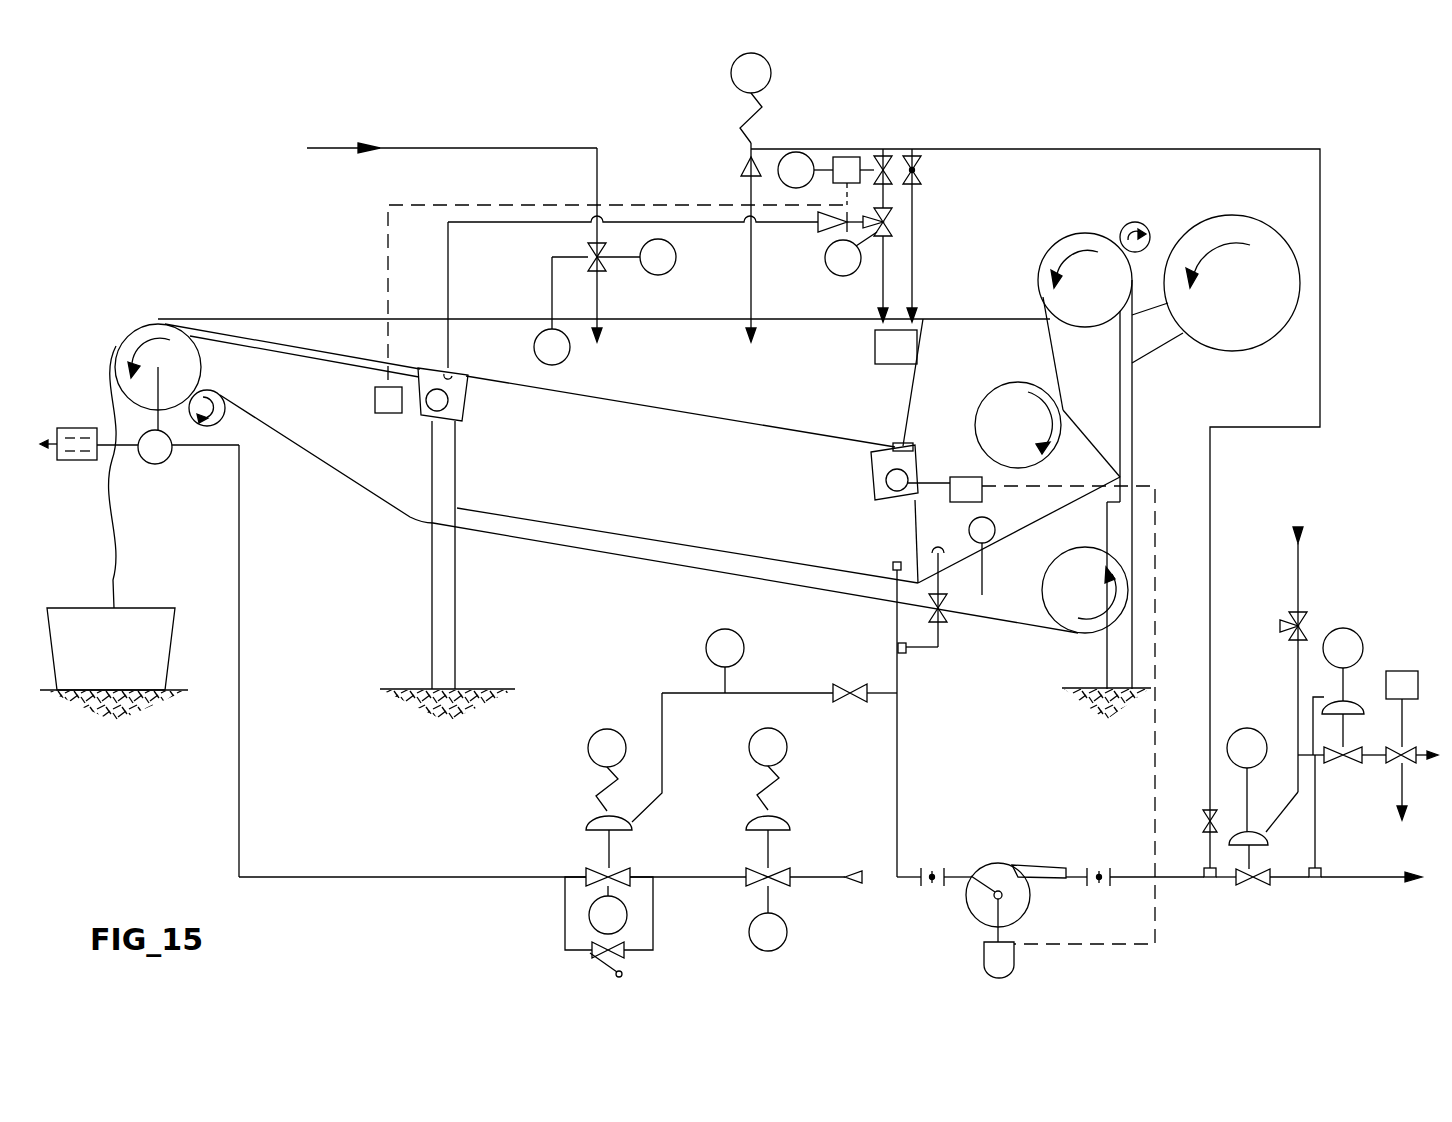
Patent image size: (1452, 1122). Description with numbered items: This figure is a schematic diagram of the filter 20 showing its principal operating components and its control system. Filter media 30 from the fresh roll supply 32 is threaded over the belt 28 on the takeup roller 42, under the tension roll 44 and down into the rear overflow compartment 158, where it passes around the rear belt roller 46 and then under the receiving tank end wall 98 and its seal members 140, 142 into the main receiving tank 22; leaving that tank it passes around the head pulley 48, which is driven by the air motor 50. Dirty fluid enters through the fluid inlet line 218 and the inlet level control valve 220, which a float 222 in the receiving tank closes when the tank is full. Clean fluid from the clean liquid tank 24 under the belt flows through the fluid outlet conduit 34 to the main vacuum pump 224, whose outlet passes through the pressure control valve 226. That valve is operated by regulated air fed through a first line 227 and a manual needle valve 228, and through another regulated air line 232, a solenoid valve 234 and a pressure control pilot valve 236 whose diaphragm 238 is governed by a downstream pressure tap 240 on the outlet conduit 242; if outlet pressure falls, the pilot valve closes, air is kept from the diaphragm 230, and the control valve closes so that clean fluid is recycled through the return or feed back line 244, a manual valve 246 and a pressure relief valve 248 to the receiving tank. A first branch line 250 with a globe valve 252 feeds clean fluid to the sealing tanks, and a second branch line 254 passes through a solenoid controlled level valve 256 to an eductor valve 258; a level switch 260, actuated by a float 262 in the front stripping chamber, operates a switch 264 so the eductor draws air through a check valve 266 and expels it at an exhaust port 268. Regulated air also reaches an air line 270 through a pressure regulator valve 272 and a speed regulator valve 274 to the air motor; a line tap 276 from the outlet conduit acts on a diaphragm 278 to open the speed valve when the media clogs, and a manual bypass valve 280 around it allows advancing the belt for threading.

The filter 20 is at (1160, 430).
The main receiving tank 22 is at (776, 403).
The clean liquid tank 24 is at (735, 528).
The belt 28 is at (1133, 408).
The filter media 30 is at (1167, 237).
The fresh roll supply 32 is at (1252, 335).
The fluid outlet conduit 34 is at (900, 681).
The takeup roller 42 is at (1100, 310).
The tension roll 44 is at (1145, 232).
The rear belt roller 46 is at (1036, 446).
The head pulley 48 is at (202, 369).
The air motor 50 is at (162, 464).
The receiving tank end wall 98 is at (918, 367).
The seal member 140 is at (890, 438).
The seal member 142 is at (912, 451).
The overflow compartment 158 is at (1042, 521).
The fluid inlet line 218 is at (412, 148).
The inlet level control valve 220 is at (601, 263).
The float 222 is at (566, 357).
The main vacuum pump 224 is at (1031, 912).
The pressure control valve 226 is at (1250, 881).
The first line 227 is at (1300, 562).
The needle valve 228 is at (1305, 628).
The diaphragm 230 is at (1230, 844).
The regulated air line 232 is at (1434, 762).
The solenoid valve 234 is at (1410, 762).
The pressure control pilot valve 236 is at (1347, 761).
The diaphragm 238 is at (1357, 700).
The downstream pressure tap 240 is at (1314, 868).
The outlet conduit 242 is at (1375, 879).
The return or feed back line 244 is at (1025, 148).
The manual valve 246 is at (1205, 822).
The pressure relief valve 248 is at (755, 142).
The first branch line 250 is at (915, 270).
The globe valve 252 is at (918, 176).
The second branch line 254 is at (883, 276).
The solenoid controlled level valve 256 is at (888, 158).
The eductor valve 258 is at (893, 231).
The level switch 260 is at (352, 407).
The float 262 is at (430, 406).
The switch 264 is at (848, 155).
The check valve 266 is at (833, 232).
The exhaust port 268 is at (832, 275).
The air line 270 is at (798, 880).
The pressure regulator valve 272 is at (775, 872).
The speed regulator valve 274 is at (620, 873).
The line tap 276 is at (674, 731).
The diaphragm 278 is at (585, 823).
The bypass valve 280 is at (628, 962).